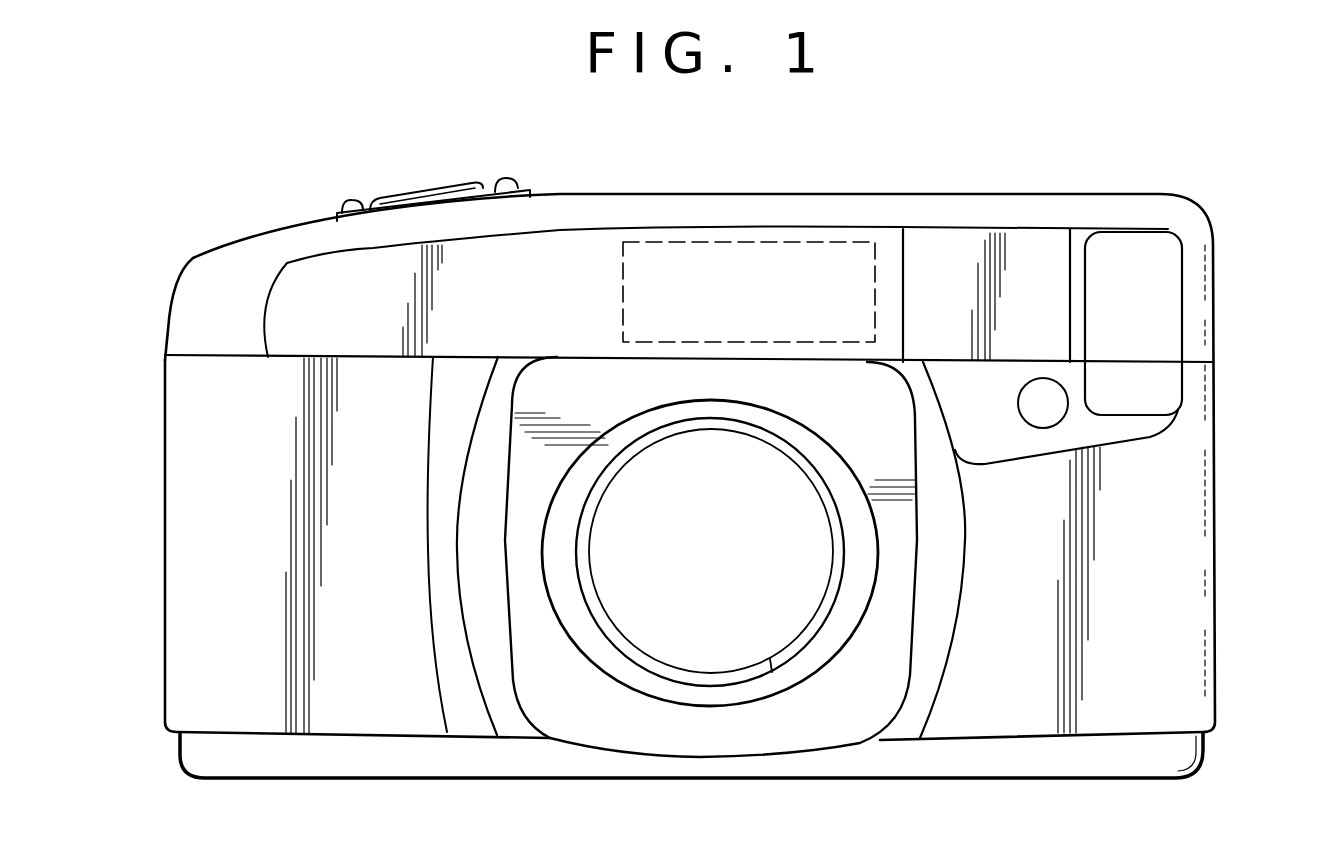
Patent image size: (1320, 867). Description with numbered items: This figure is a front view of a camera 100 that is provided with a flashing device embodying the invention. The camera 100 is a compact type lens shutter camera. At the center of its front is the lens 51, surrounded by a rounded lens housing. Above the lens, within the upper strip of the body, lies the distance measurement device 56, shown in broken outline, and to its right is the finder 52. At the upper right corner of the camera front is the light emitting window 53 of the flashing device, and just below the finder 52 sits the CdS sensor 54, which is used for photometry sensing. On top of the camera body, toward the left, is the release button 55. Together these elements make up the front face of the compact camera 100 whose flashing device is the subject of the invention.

The camera 100 is at (215, 221).
The lens 51 is at (703, 658).
The finder 52 is at (1045, 245).
The light emitting window 53 is at (1165, 315).
The CdS sensor 54 is at (1040, 428).
The release button 55 is at (430, 188).
The distance measurement device 56 is at (765, 255).